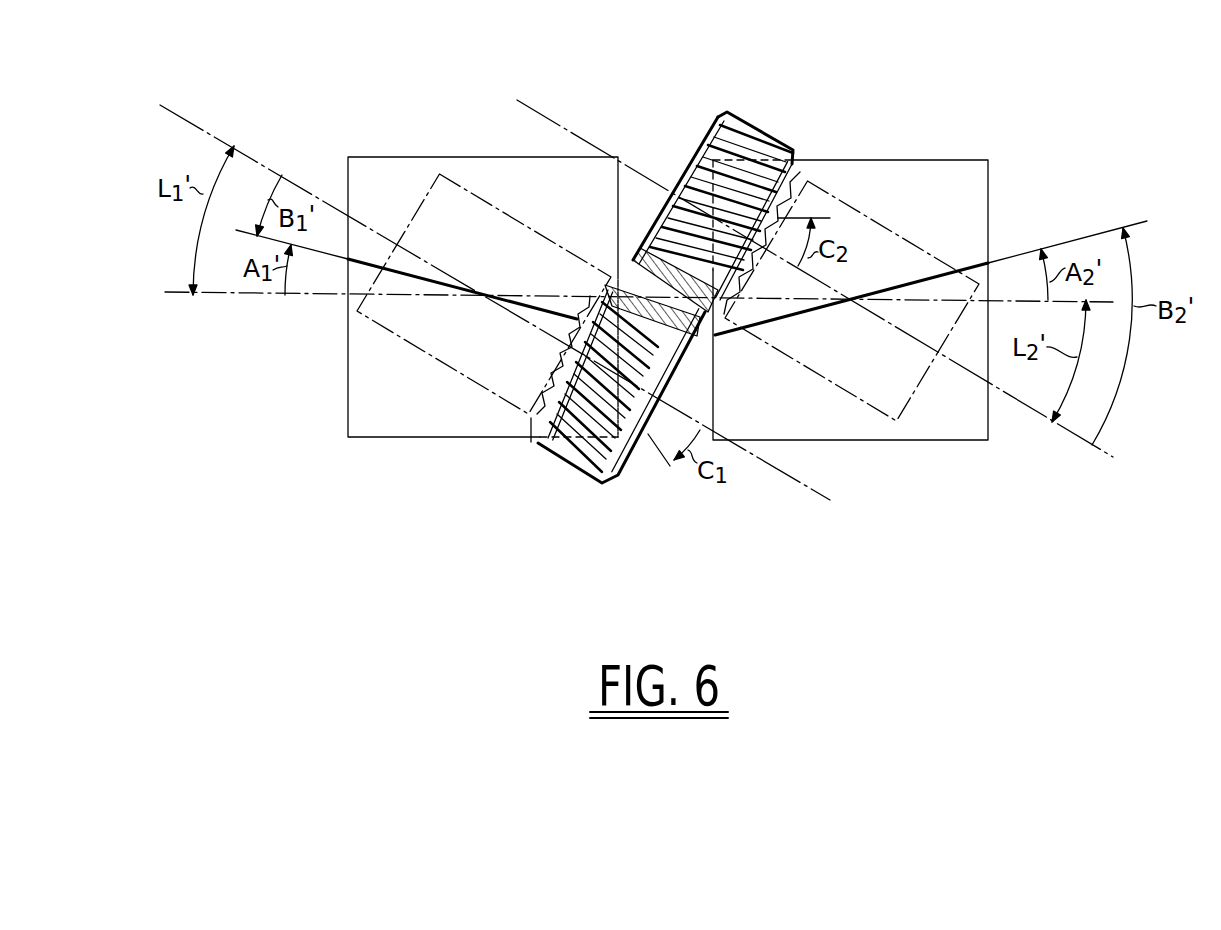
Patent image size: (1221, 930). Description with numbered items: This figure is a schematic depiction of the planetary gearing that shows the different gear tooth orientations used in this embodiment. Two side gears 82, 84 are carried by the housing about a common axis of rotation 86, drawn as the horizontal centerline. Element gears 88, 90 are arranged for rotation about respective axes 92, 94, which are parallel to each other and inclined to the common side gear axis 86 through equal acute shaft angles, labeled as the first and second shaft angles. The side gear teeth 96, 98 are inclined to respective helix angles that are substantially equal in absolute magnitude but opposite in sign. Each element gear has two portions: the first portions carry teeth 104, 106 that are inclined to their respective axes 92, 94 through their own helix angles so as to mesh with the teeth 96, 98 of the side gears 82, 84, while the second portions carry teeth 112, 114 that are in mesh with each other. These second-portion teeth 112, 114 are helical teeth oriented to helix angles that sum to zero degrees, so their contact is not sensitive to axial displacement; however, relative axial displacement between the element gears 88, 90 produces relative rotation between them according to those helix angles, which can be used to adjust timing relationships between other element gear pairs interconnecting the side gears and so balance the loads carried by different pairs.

The side gear 82 is at (383, 426).
The side gear 84 is at (935, 430).
The common axis of rotation 86 is at (1097, 305).
The element gear 88 is at (537, 226).
The element gear 90 is at (831, 389).
The axis of element gear 88 92 is at (168, 107).
The axis of element gear 90 94 is at (528, 106).
The side gear teeth 96 is at (358, 255).
The side gear teeth 98 is at (972, 262).
The first element gear portion teeth 104 is at (543, 314).
The first element gear portion teeth 106 is at (765, 325).
The second element gear portion teeth 112 is at (648, 447).
The second element gear portion teeth 114 is at (688, 195).